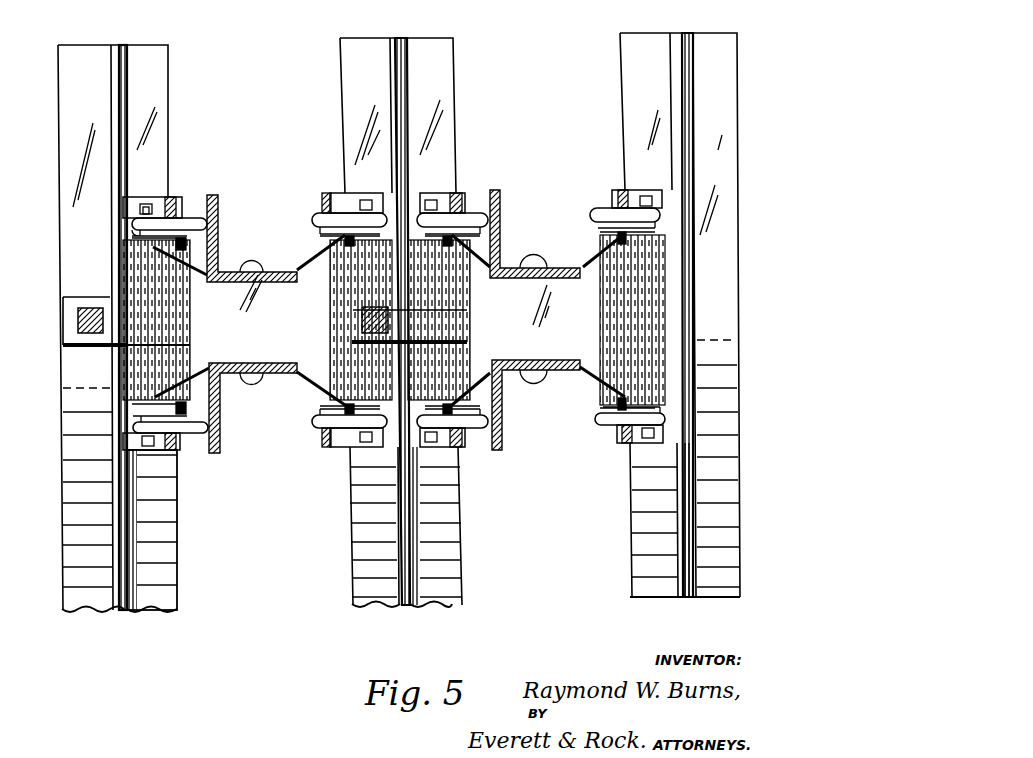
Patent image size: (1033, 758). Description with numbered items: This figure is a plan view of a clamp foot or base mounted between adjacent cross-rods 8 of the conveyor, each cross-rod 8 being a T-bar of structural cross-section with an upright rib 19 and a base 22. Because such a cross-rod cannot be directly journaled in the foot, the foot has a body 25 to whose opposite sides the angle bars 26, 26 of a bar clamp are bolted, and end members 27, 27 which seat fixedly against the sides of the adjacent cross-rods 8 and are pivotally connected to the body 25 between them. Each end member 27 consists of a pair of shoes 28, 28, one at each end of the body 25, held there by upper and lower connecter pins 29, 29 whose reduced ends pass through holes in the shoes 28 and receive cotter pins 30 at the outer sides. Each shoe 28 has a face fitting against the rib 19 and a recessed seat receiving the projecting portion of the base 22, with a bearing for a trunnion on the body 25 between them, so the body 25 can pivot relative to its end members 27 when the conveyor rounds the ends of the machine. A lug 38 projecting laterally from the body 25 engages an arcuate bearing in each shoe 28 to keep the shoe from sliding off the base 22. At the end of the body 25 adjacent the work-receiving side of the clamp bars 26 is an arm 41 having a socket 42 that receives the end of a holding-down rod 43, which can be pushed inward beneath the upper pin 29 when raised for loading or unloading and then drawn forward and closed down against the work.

The cross-rod 8 is at (170, 598).
The rib 19 is at (118, 118).
The base 22 is at (161, 87).
The body 25 is at (395, 303).
The angle bar 26 is at (217, 255).
The end member 27 is at (201, 205).
The shoe 28 is at (183, 200).
The pin 29 is at (146, 204).
The cotter pin 30 is at (172, 197).
The lug 38 is at (165, 270).
The arm 41 is at (66, 342).
The socket 42 is at (98, 345).
The holding-down rod 43 is at (86, 308).